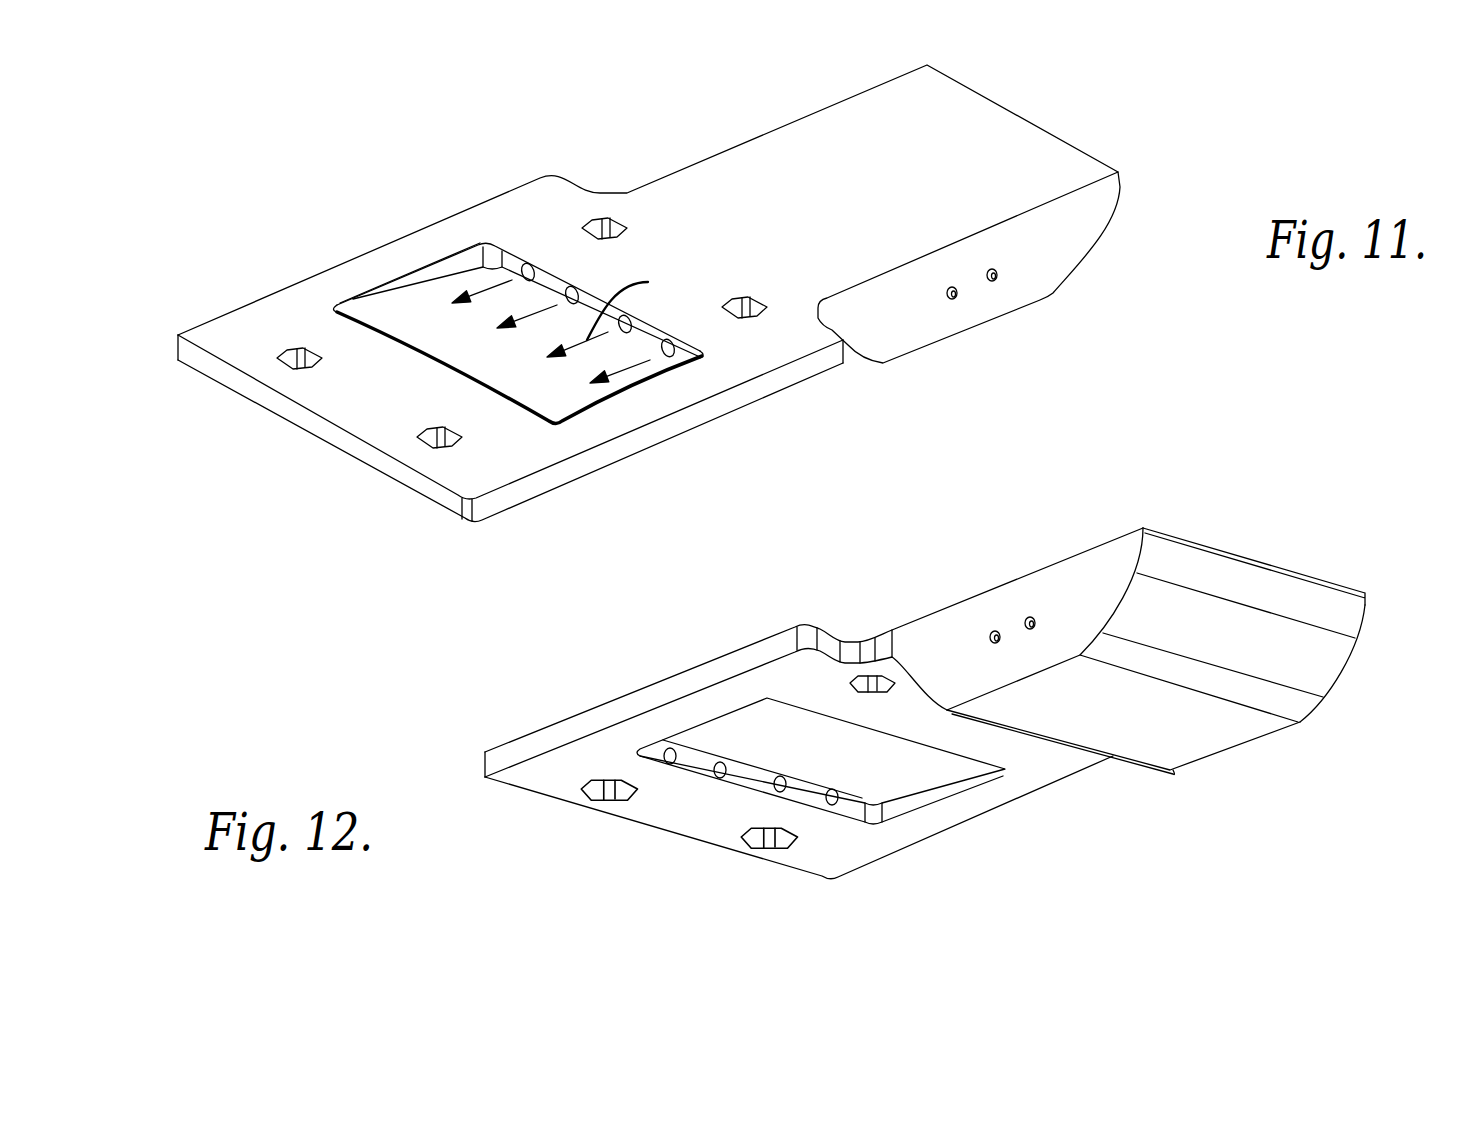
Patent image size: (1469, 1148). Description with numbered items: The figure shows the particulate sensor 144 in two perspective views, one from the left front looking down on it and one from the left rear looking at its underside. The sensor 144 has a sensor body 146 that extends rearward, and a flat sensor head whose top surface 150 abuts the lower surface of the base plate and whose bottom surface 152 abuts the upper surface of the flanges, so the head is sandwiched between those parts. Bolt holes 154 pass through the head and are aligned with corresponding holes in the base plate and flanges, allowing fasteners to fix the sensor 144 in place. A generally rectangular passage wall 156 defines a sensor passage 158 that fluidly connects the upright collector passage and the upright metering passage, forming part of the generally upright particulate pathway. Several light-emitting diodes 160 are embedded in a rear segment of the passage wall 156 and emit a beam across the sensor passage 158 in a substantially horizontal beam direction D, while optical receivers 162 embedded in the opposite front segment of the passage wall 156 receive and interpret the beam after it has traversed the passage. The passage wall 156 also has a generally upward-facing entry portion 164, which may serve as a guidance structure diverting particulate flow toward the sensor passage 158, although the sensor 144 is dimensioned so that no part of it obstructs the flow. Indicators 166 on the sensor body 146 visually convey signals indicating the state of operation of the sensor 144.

In FIG. 11, the sensor 144 is at (1097, 121).
In FIG. 12, the sensor 144 is at (1314, 541).
In FIG. 11, the sensor body 146 is at (1065, 252).
In FIG. 12, the sensor body 146 is at (1113, 553).
In FIG. 11, the top surface 150 is at (345, 403).
In FIG. 12, the bottom surface 152 is at (520, 778).
In FIG. 11, the bolt holes 154 is at (595, 225).
In FIG. 12, the bolt holes 154 is at (867, 683).
In FIG. 11, the passage wall 156 is at (437, 282).
In FIG. 12, the passage wall 156 is at (957, 782).
In FIG. 11, the sensor passage 158 is at (443, 320).
In FIG. 11, the light-emitting diodes 160 is at (528, 264).
In FIG. 12, the optical receivers 162 is at (672, 762).
In FIG. 11, the entry portion 164 is at (353, 300).
In FIG. 12, the entry portion 164 is at (927, 782).
In FIG. 11, the indicators 166 is at (993, 279).
In FIG. 12, the indicators 166 is at (1030, 618).